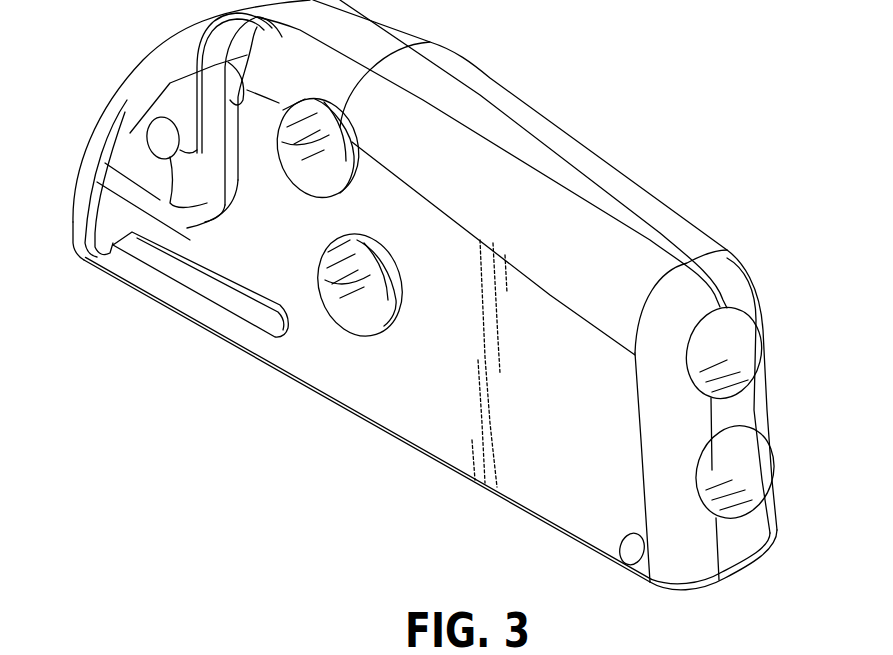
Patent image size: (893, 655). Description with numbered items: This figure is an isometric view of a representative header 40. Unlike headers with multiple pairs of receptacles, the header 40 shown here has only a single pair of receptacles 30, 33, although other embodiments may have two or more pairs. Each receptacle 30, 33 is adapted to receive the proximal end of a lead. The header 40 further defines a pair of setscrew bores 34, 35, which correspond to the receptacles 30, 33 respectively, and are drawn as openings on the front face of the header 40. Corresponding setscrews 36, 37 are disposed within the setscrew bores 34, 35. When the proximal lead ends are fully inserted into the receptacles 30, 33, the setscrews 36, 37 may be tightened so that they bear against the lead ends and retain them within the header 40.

The header 40 is at (676, 143).
The receptacle 30 is at (742, 361).
The receptacle 33 is at (756, 483).
The setscrew bore 34 is at (333, 187).
The setscrew 36 is at (291, 162).
The setscrew bore 35 is at (374, 326).
The setscrew 37 is at (336, 300).